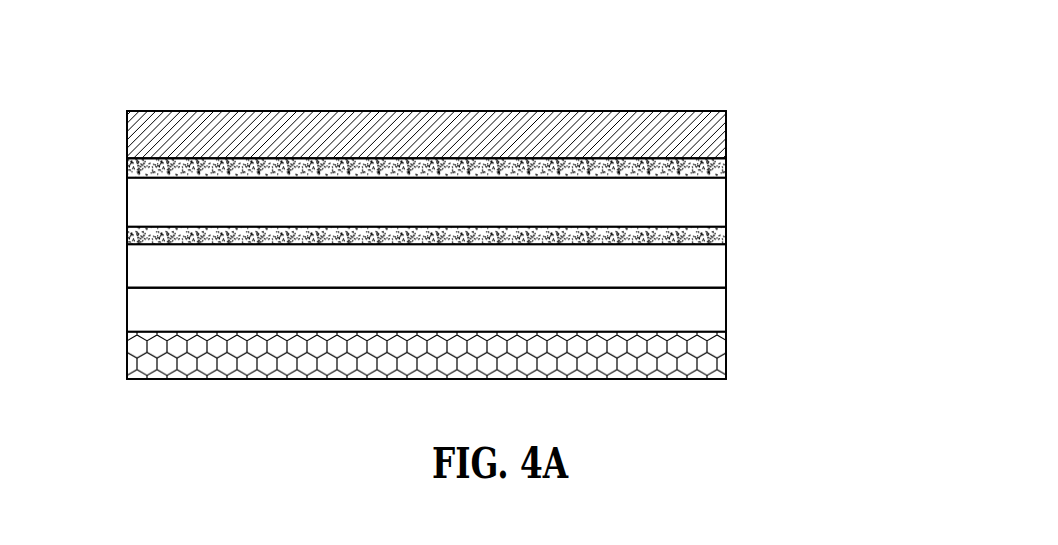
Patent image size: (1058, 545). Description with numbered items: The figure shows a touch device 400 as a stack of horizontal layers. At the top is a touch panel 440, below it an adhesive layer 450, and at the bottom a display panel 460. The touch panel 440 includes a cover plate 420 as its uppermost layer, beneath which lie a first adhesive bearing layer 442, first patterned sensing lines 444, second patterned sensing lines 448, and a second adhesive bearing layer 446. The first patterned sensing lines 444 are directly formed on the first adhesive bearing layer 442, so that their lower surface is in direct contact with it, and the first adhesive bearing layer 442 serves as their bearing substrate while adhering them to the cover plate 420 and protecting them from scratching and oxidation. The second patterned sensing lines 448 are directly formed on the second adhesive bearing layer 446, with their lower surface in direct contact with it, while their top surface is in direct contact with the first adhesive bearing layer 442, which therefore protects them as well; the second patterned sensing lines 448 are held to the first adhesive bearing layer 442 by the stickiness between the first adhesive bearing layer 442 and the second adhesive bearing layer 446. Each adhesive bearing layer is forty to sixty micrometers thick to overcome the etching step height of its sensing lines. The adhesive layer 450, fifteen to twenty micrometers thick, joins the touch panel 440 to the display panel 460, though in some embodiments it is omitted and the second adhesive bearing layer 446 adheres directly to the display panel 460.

The touch device 400 is at (99, 65).
The cover plate 420 is at (705, 119).
The touch panel 440 is at (872, 92).
The first patterned sensing lines 444 is at (707, 168).
The first adhesive bearing layer 442 is at (707, 203).
The second patterned sensing lines 448 is at (707, 238).
The second adhesive bearing layer 446 is at (705, 271).
The adhesive layer 450 is at (705, 322).
The display panel 460 is at (705, 362).